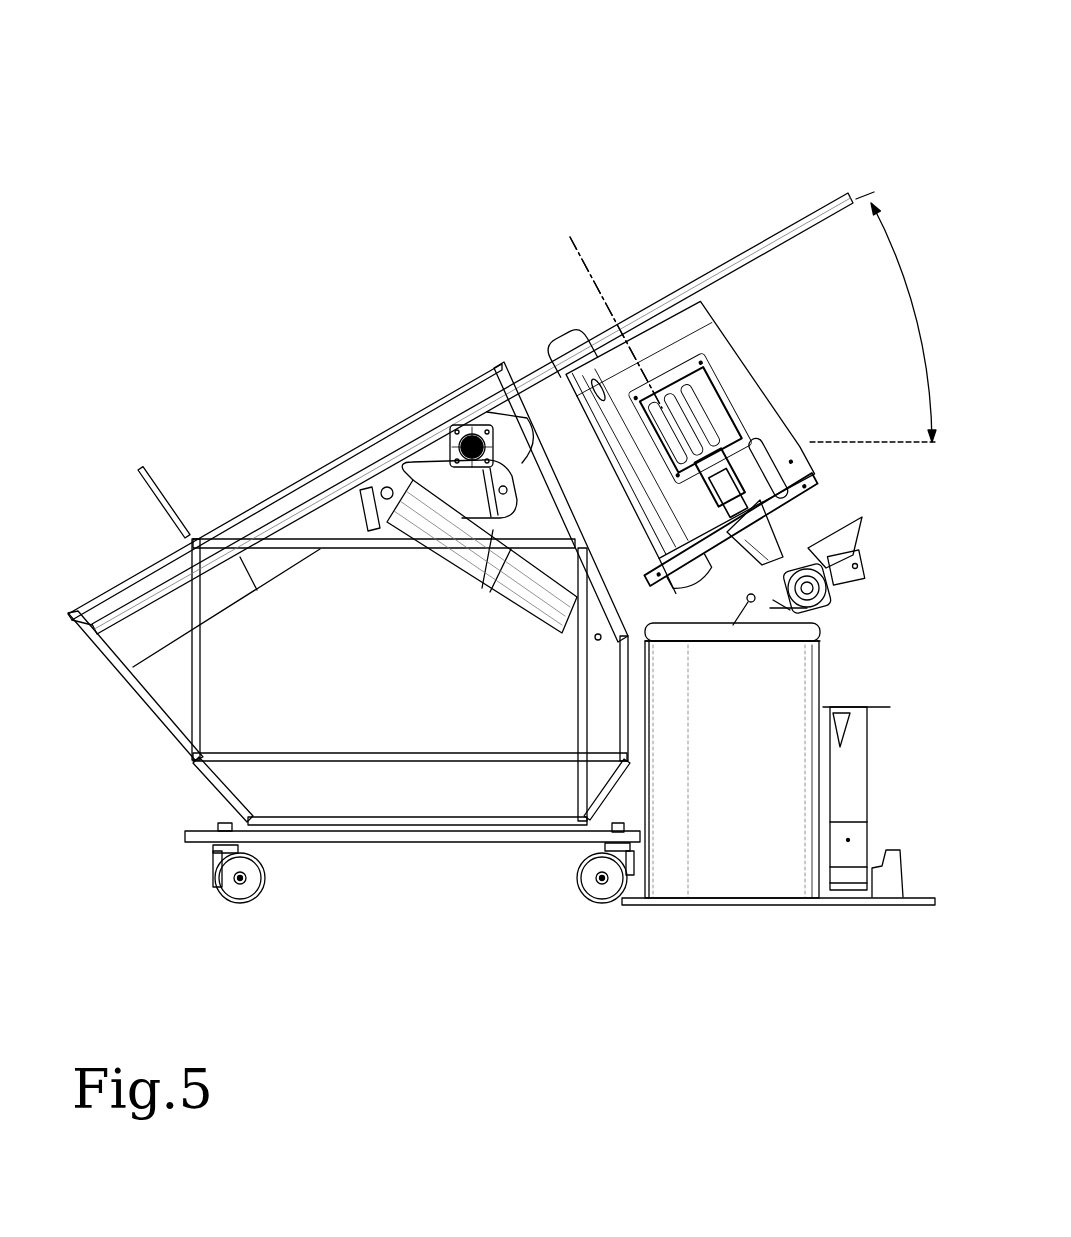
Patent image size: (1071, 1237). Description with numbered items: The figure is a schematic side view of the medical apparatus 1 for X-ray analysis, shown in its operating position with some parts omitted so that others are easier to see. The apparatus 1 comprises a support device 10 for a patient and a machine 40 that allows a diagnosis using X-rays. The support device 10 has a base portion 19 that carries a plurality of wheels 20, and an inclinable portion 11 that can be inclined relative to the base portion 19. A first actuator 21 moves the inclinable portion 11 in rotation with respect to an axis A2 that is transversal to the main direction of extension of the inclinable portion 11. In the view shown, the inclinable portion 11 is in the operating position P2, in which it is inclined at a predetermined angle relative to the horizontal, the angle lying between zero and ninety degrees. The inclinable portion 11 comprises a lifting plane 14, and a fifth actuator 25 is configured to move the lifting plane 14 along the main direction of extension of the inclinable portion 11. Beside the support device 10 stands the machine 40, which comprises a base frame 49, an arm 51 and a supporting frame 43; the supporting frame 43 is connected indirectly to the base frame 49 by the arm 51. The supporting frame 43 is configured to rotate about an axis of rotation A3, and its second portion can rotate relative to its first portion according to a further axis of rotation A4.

The medical apparatus 1 is at (283, 134).
The support device 10 is at (124, 722).
The inclinable portion 11 is at (830, 200).
The lifting plane 14 is at (140, 470).
The base portion 19 is at (590, 730).
The wheels 20 is at (230, 890).
The first actuator 21 is at (430, 480).
The fifth actuator 25 is at (527, 380).
The machine 40 is at (750, 920).
The supporting frame 43 is at (797, 502).
The base frame 49 is at (783, 823).
The arm 51 is at (770, 608).
The axis A2 is at (455, 420).
The axis of rotation A3 is at (587, 260).
The further axis of rotation A4 is at (590, 262).
The operating position P2 is at (727, 222).